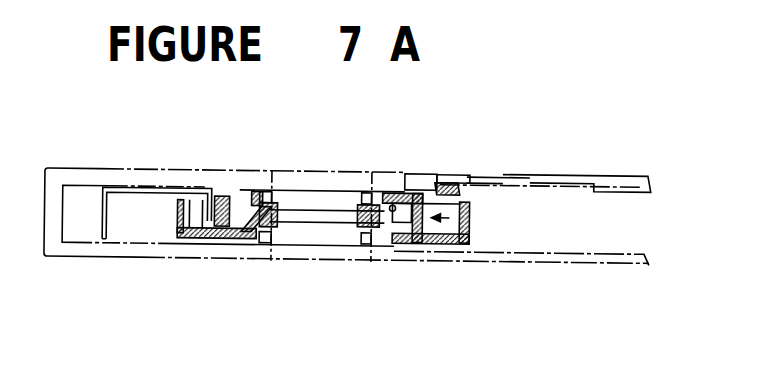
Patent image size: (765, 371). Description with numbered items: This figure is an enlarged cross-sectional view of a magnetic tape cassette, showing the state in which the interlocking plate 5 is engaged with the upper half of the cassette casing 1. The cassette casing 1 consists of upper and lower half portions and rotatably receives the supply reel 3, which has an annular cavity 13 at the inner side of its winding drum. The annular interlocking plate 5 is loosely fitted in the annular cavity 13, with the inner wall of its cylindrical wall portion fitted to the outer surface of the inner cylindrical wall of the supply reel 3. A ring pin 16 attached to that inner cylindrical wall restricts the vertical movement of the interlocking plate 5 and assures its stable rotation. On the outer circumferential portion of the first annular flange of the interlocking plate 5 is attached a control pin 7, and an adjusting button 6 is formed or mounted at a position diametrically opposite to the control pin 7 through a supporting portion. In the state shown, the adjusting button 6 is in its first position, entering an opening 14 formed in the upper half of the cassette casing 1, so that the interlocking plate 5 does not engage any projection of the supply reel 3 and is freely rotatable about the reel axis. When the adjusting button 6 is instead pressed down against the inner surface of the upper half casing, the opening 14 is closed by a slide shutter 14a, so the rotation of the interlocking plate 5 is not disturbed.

The cassette casing 1 is at (250, 163).
The supply reel 3 is at (180, 240).
The interlocking plate 5 is at (413, 239).
The adjusting button 6 is at (438, 177).
The control pin 7 is at (143, 183).
The annular cavity 13 is at (186, 230).
The opening 14 is at (455, 172).
The slide shutter 14a is at (503, 174).
The ring pin 16 is at (247, 196).